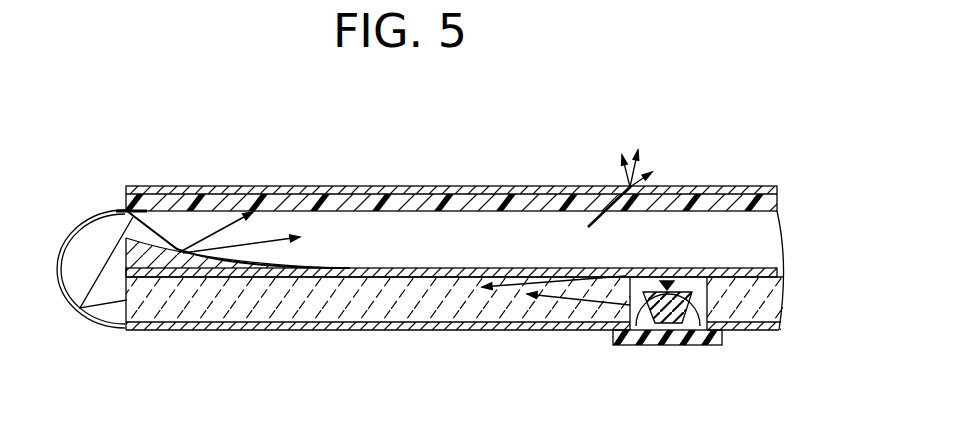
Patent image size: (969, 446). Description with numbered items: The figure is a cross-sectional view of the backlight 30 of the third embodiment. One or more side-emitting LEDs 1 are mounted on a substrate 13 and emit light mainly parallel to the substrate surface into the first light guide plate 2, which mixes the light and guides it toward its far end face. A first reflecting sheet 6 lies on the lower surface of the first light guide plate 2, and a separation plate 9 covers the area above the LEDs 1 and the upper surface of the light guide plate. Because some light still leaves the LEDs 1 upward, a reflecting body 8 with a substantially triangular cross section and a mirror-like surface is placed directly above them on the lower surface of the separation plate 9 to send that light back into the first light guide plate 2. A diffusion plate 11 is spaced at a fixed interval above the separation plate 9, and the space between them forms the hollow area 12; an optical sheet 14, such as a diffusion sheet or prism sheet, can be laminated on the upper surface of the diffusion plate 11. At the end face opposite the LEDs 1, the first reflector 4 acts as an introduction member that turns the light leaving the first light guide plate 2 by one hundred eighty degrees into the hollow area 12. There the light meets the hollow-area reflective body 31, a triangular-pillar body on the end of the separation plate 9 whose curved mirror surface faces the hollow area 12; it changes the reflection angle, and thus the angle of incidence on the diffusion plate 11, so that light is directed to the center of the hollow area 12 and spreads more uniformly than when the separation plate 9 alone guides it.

The LED 1 is at (668, 332).
The first light guide plate 2 is at (378, 298).
The first reflector 4 is at (92, 325).
The first reflecting sheet 6 is at (448, 330).
The reflecting body 8 is at (735, 290).
The separation plate 9 is at (352, 267).
The diffusion plate 11 is at (697, 201).
The hollow area 12 is at (198, 227).
The substrate 13 is at (707, 340).
The optical sheet 14 is at (312, 200).
The backlight 30 is at (472, 256).
The hollow-area reflective body 31 is at (148, 258).